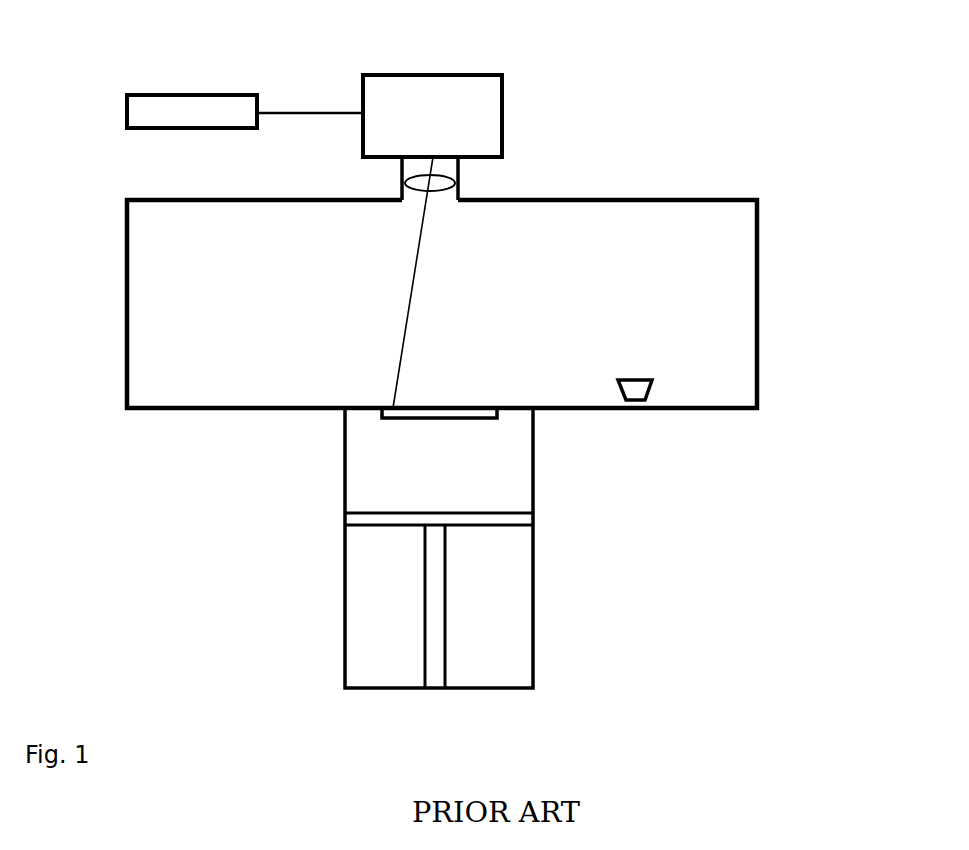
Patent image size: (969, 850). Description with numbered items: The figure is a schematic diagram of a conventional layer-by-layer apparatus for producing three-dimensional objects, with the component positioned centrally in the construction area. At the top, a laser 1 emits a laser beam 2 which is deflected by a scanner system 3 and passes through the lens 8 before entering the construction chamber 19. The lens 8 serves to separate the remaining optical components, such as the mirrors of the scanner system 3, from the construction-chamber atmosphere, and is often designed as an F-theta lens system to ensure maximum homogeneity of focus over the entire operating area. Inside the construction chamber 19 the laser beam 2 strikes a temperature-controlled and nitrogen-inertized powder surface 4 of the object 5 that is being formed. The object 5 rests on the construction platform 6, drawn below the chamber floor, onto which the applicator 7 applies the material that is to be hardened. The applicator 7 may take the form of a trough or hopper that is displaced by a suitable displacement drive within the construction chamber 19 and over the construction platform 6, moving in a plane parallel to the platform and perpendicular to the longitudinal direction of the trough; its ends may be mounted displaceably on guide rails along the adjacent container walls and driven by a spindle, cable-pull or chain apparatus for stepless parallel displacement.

The laser 1 is at (148, 110).
The laser beam 2 is at (310, 113).
The scanner system 3 is at (383, 130).
The powder surface 4 is at (393, 406).
The object 5 is at (448, 421).
The construction platform 6 is at (527, 518).
The applicator 7 is at (652, 395).
The lens 8 is at (440, 183).
The construction chamber 19 is at (752, 245).